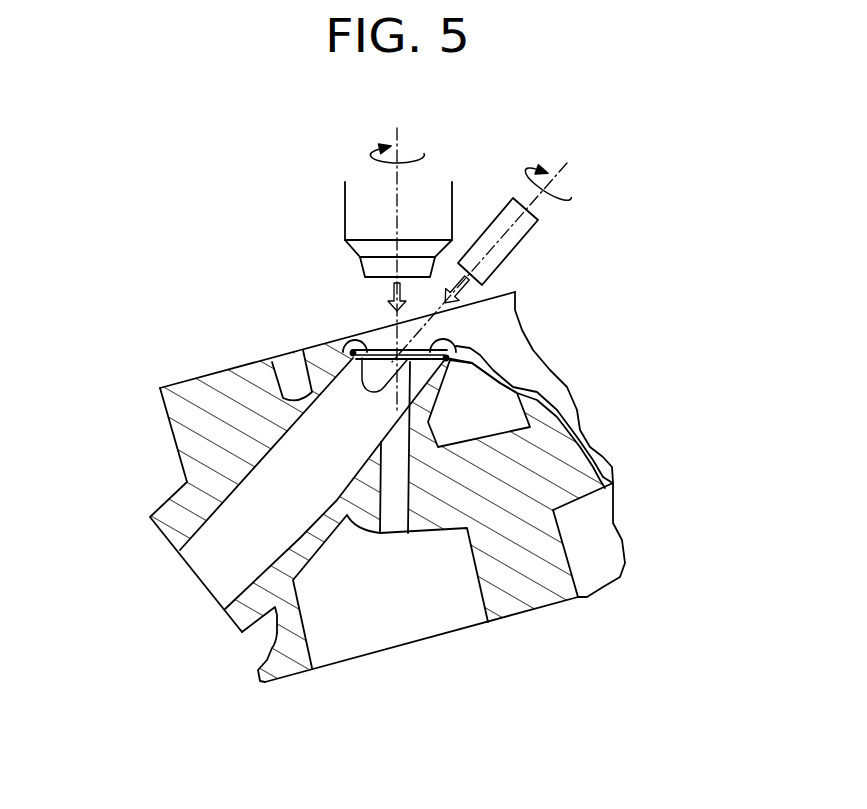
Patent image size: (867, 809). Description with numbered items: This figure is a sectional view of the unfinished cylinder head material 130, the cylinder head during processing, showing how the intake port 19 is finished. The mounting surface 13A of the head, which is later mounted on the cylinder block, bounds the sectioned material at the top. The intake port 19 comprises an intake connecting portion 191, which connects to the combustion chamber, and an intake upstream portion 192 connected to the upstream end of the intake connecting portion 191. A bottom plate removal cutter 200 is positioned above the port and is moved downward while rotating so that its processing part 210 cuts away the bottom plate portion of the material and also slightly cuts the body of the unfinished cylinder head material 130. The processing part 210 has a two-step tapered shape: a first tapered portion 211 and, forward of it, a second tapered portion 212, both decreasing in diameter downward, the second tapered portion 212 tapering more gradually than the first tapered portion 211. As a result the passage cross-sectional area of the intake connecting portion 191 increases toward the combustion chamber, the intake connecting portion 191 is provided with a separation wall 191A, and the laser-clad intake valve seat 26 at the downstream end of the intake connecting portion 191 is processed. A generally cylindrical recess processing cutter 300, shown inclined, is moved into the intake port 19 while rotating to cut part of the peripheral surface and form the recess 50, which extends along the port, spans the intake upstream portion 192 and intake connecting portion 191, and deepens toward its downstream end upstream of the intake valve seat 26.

The bottom plate removal cutter 200 is at (328, 270).
The processing part 210 is at (328, 257).
The first tapered portion 211 is at (362, 249).
The second tapered portion 212 is at (370, 272).
The recess processing cutter 300 is at (540, 222).
The separation wall 191A is at (358, 339).
The intake connecting portion 191 is at (421, 327).
The intake valve seat 26 is at (482, 358).
The intake upstream portion 192 is at (381, 424).
The recess 50 is at (360, 388).
The mounting surface 13A is at (180, 382).
The unfinished cylinder head material 130 is at (414, 487).
The intake port 19 is at (257, 598).